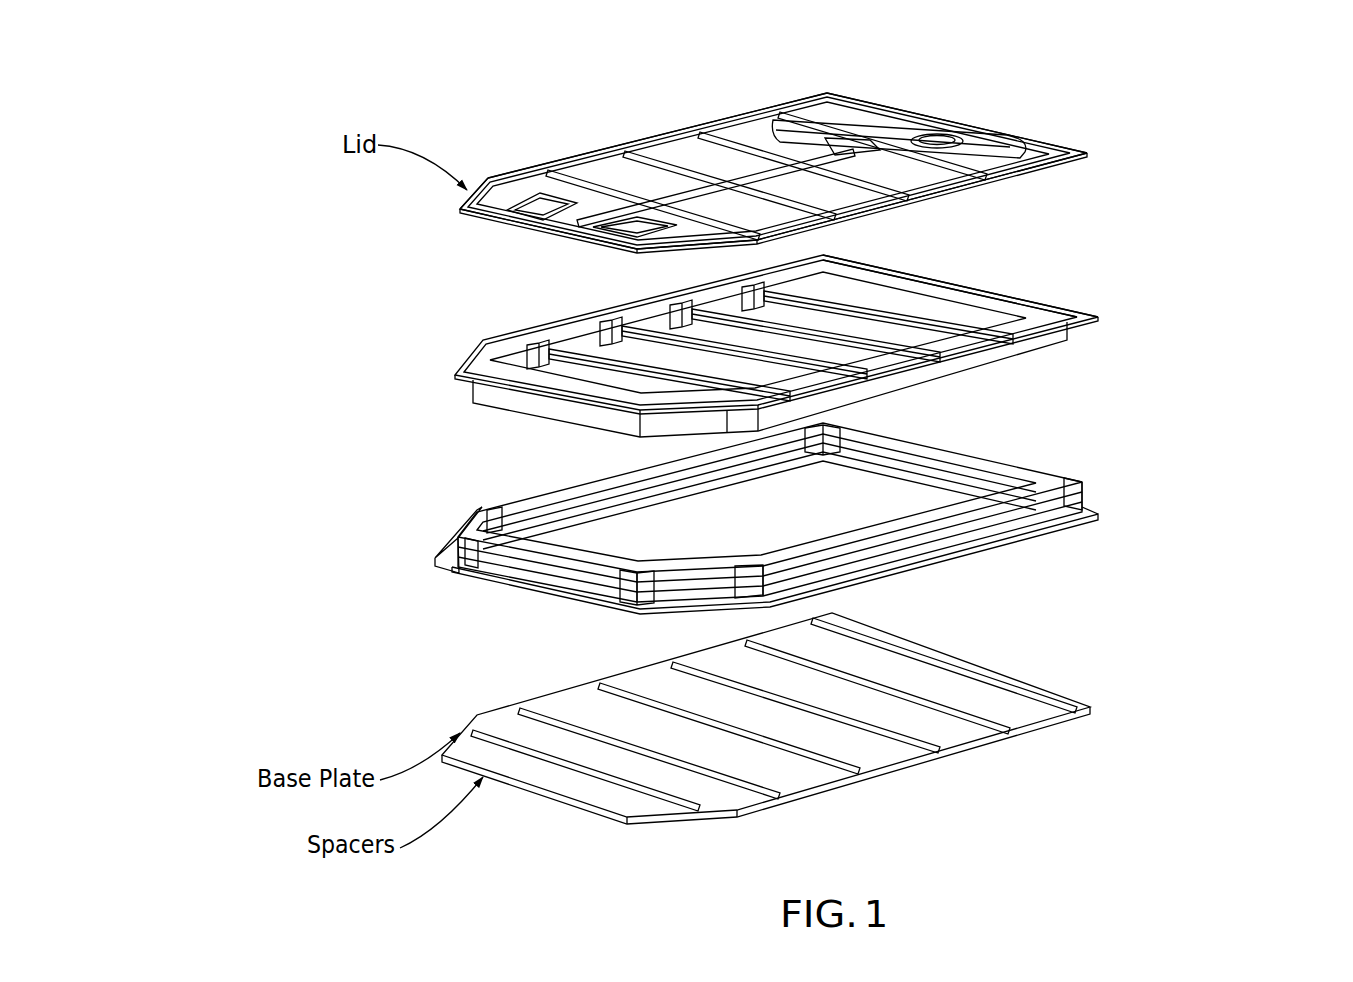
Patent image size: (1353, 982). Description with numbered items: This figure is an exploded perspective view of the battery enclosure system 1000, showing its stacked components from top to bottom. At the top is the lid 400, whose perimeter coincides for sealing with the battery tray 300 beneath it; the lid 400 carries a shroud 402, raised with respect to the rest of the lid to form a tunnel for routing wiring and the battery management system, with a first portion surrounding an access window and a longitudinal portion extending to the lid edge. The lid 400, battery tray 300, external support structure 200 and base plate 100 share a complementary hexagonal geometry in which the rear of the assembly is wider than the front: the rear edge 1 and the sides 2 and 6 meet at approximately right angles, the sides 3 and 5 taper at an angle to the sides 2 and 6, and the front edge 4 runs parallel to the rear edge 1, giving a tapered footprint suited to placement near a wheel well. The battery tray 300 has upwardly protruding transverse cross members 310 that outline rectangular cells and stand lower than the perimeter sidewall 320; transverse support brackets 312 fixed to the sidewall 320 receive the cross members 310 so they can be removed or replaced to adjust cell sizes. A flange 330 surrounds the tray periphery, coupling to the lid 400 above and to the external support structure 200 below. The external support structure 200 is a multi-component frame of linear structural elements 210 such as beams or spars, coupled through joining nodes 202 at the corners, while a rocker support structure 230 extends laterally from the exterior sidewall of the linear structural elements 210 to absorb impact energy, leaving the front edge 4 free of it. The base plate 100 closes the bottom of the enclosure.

The battery enclosure system 1000 is at (303, 123).
The lid 400 is at (1137, 235).
The shroud 402 is at (783, 120).
The rear edge 1 is at (957, 119).
The side 2 is at (922, 196).
The side 3 is at (697, 259).
The front edge 4 is at (548, 237).
The side 5 is at (461, 195).
The side 6 is at (657, 135).
The battery tray 300 is at (1263, 308).
The transverse cross members 310 is at (543, 337).
The transverse support brackets 312 is at (520, 357).
The perimeter sidewall 320 is at (995, 322).
The flange 330 is at (907, 270).
The external support structure 200 is at (1263, 478).
The linear structural elements 210 is at (507, 492).
The rocker support structure 230 is at (433, 556).
The joining nodes 202 is at (610, 608).
The base plate 100 is at (1267, 688).